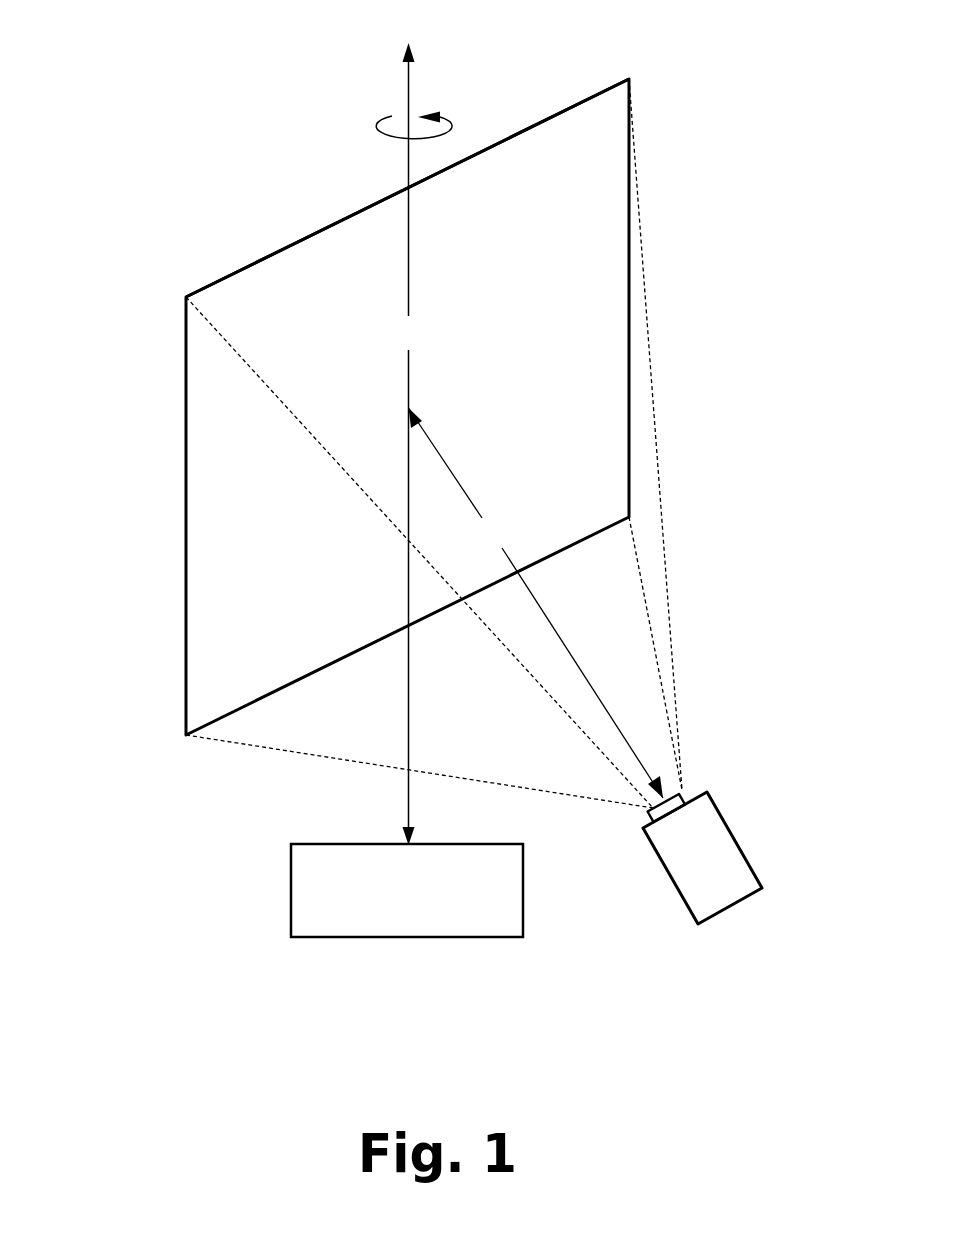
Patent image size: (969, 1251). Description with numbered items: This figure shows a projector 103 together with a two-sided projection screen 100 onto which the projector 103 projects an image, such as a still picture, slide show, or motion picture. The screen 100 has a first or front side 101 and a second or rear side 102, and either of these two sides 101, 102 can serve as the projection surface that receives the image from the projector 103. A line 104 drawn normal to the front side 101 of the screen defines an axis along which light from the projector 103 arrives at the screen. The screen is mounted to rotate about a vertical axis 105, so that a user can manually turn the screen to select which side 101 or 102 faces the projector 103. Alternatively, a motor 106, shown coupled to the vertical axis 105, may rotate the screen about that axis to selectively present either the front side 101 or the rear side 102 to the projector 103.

The projection screen 100 is at (180, 441).
The front side 101 is at (556, 160).
The rear side 102 is at (260, 260).
The projector 103 is at (713, 842).
The line normal to the front side 104 is at (536, 603).
The vertical axis 105 is at (414, 444).
The motor 106 is at (407, 890).